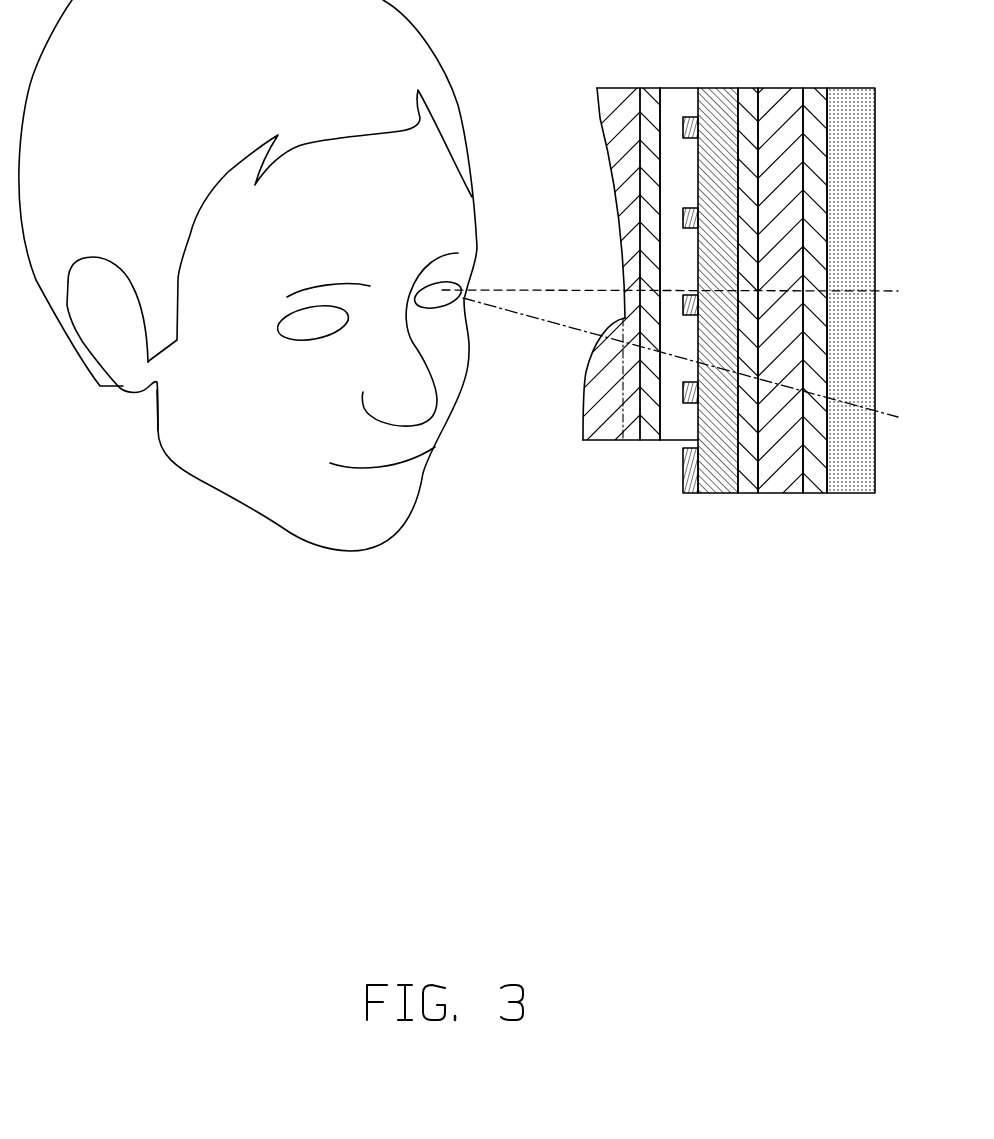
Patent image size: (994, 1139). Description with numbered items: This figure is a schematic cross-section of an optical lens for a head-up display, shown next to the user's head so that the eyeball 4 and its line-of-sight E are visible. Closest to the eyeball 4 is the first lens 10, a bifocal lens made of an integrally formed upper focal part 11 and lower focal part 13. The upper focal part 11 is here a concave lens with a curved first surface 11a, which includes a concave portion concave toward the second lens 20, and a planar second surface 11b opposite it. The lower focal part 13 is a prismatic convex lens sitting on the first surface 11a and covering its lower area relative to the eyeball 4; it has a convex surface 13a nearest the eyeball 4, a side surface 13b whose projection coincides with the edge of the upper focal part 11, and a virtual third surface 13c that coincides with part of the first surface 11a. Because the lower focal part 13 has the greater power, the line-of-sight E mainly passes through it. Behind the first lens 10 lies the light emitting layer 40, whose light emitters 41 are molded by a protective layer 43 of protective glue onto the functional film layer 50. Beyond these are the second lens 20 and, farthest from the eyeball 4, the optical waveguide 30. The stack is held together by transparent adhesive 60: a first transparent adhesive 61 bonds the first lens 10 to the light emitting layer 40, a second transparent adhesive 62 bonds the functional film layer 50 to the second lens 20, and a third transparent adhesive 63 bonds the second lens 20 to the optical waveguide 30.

The eyeball 4 is at (423, 300).
The first lens 10 is at (724, 275).
The upper focal part 11 is at (738, 282).
The first surface 11a is at (608, 150).
The second surface 11b is at (646, 118).
The lower focal part 13 is at (575, 411).
The convex surface 13a is at (581, 398).
The side surface 13b is at (605, 444).
The third surface 13c is at (616, 421).
The second lens 20 is at (779, 118).
The optical waveguide 30 is at (854, 95).
The light emitting layer 40 is at (630, 269).
The light emitter 41 is at (683, 208).
The protective layer 43 is at (670, 243).
The functional film layer 50 is at (720, 98).
The transparent adhesive 60 is at (734, 320).
The first transparent adhesive 61 is at (650, 427).
The second transparent adhesive 62 is at (745, 480).
The third transparent adhesive 63 is at (813, 311).
The line-of-sight E is at (683, 354).